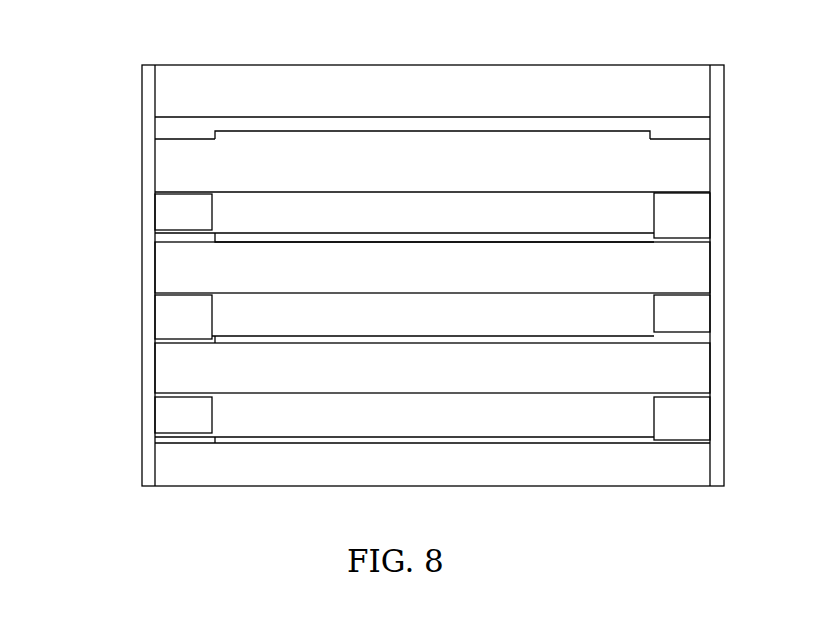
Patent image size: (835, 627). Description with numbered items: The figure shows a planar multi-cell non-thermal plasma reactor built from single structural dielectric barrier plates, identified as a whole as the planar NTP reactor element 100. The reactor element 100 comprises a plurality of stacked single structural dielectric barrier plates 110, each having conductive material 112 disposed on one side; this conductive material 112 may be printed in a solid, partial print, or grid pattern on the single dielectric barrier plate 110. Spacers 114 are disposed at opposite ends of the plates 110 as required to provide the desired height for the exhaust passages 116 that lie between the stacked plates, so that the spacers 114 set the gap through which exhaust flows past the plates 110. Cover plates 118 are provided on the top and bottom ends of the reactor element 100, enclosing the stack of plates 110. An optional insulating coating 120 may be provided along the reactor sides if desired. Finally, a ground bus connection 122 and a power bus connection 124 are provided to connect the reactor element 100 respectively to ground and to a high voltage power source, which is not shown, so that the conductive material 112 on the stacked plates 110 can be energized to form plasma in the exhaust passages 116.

The planar NTP reactor element 100 is at (158, 58).
The single structural dielectric barrier plate 110 is at (595, 158).
The conductive material 112 is at (540, 135).
The spacer 114 is at (685, 217).
The exhaust passage 116 is at (470, 223).
The cover plate 118 is at (432, 93).
The insulating coating 120 is at (147, 456).
The ground bus connection 122 is at (160, 235).
The power bus connection 124 is at (685, 127).